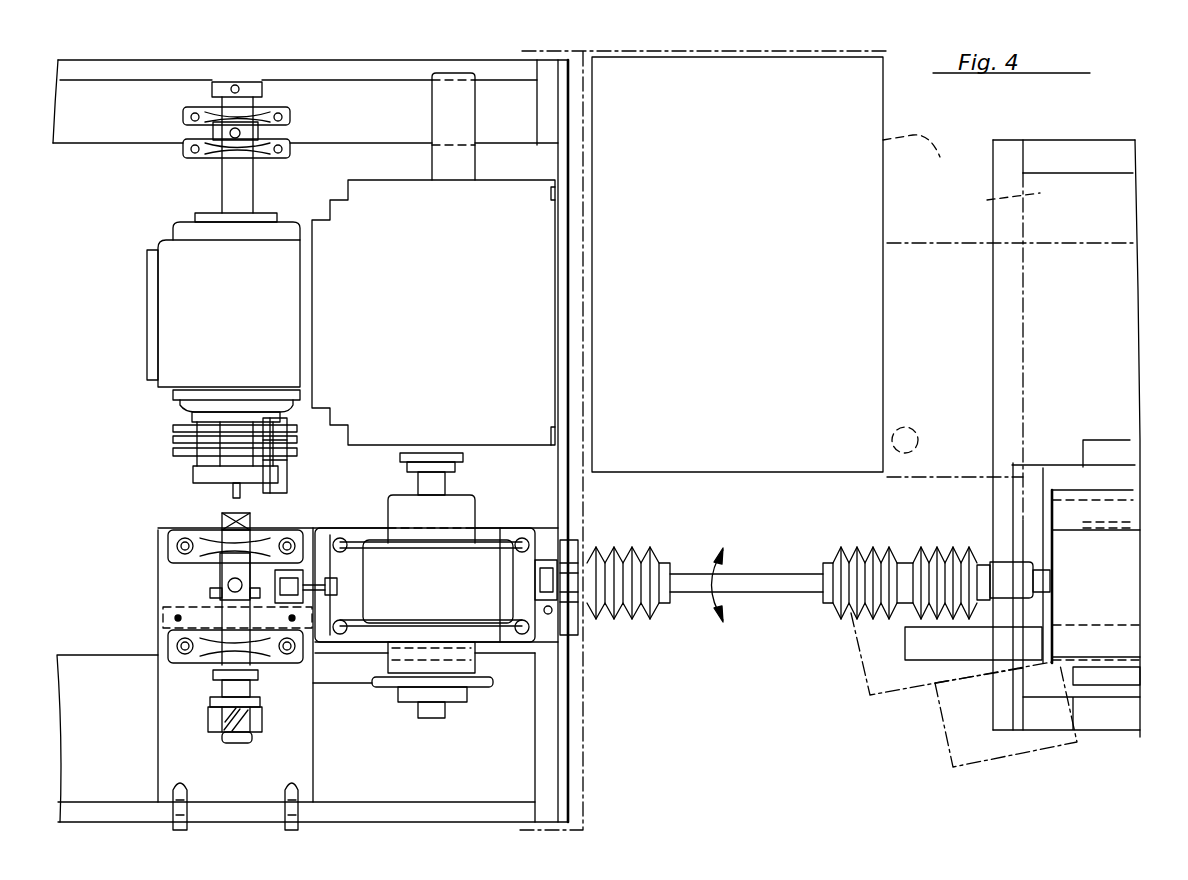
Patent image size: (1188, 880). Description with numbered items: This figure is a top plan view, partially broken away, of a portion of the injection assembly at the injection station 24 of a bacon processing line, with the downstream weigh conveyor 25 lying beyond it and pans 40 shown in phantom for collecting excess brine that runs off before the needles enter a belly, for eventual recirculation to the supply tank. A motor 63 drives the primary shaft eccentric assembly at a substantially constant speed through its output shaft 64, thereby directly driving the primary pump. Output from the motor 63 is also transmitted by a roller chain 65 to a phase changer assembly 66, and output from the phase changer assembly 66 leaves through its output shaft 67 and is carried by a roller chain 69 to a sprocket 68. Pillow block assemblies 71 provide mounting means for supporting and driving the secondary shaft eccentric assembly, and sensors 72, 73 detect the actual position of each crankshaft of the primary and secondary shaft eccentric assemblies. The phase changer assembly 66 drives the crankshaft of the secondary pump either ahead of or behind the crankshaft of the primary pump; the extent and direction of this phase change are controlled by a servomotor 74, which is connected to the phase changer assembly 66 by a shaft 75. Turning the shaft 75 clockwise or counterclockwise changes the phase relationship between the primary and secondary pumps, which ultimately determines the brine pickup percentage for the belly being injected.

The injection station 24 is at (597, 723).
The downstream weigh conveyor 25 is at (1043, 142).
The pans 40 is at (987, 200).
The motor 63 is at (180, 290).
The output shaft 64 is at (232, 183).
The roller chain 65 is at (300, 453).
The phase changer assembly 66 is at (457, 500).
The output shaft 67 is at (433, 708).
The sprocket 68 is at (213, 687).
The roller chain 69 is at (333, 683).
The pillow block assemblies 71 is at (165, 566).
The sensor 72 is at (212, 126).
The sensor 73 is at (222, 570).
The servomotor 74 is at (1113, 594).
The shaft 75 is at (770, 583).